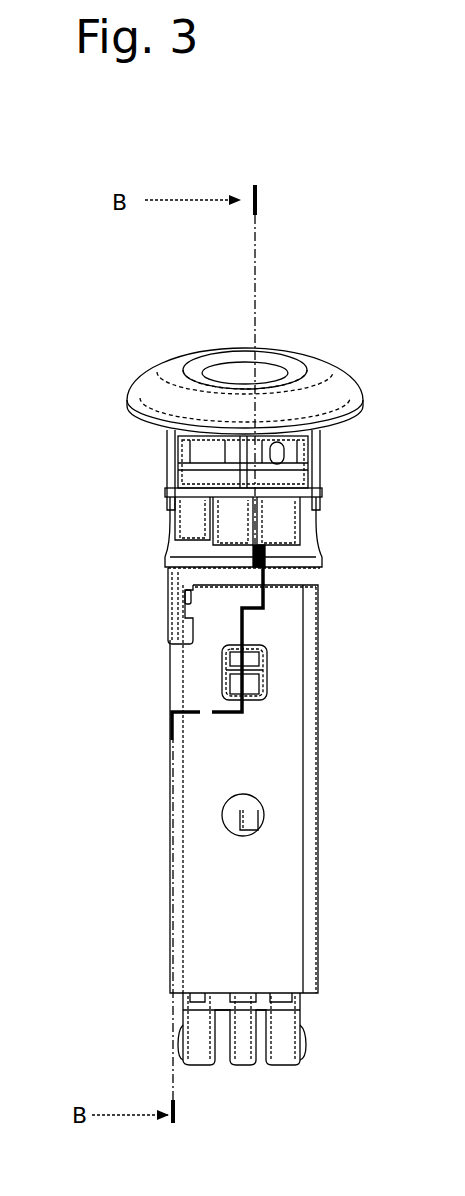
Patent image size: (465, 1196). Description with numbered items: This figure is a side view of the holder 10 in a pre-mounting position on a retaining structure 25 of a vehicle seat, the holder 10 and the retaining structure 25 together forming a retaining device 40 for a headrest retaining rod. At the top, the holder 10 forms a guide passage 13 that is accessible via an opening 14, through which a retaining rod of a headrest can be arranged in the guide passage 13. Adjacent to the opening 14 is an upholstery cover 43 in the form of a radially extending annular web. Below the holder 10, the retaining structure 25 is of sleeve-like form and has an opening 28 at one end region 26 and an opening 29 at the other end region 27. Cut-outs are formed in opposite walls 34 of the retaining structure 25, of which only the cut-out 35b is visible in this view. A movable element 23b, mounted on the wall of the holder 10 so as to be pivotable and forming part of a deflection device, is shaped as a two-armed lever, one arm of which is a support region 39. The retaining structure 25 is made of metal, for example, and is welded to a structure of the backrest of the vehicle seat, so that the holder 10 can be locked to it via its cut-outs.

The holder 10 is at (385, 215).
The guide passage 13 is at (225, 378).
The opening 14 is at (240, 365).
The retaining device 40 is at (306, 300).
The upholstery cover 43 is at (340, 383).
The opening 28 is at (185, 580).
The end region 26 is at (338, 610).
The cut-out 35b is at (222, 682).
The movable element 23b is at (250, 683).
The support region 39 is at (464, 758).
The retaining structure 25 is at (212, 852).
The wall 34 is at (213, 910).
The end region 27 is at (325, 975).
The opening 29 is at (178, 1003).